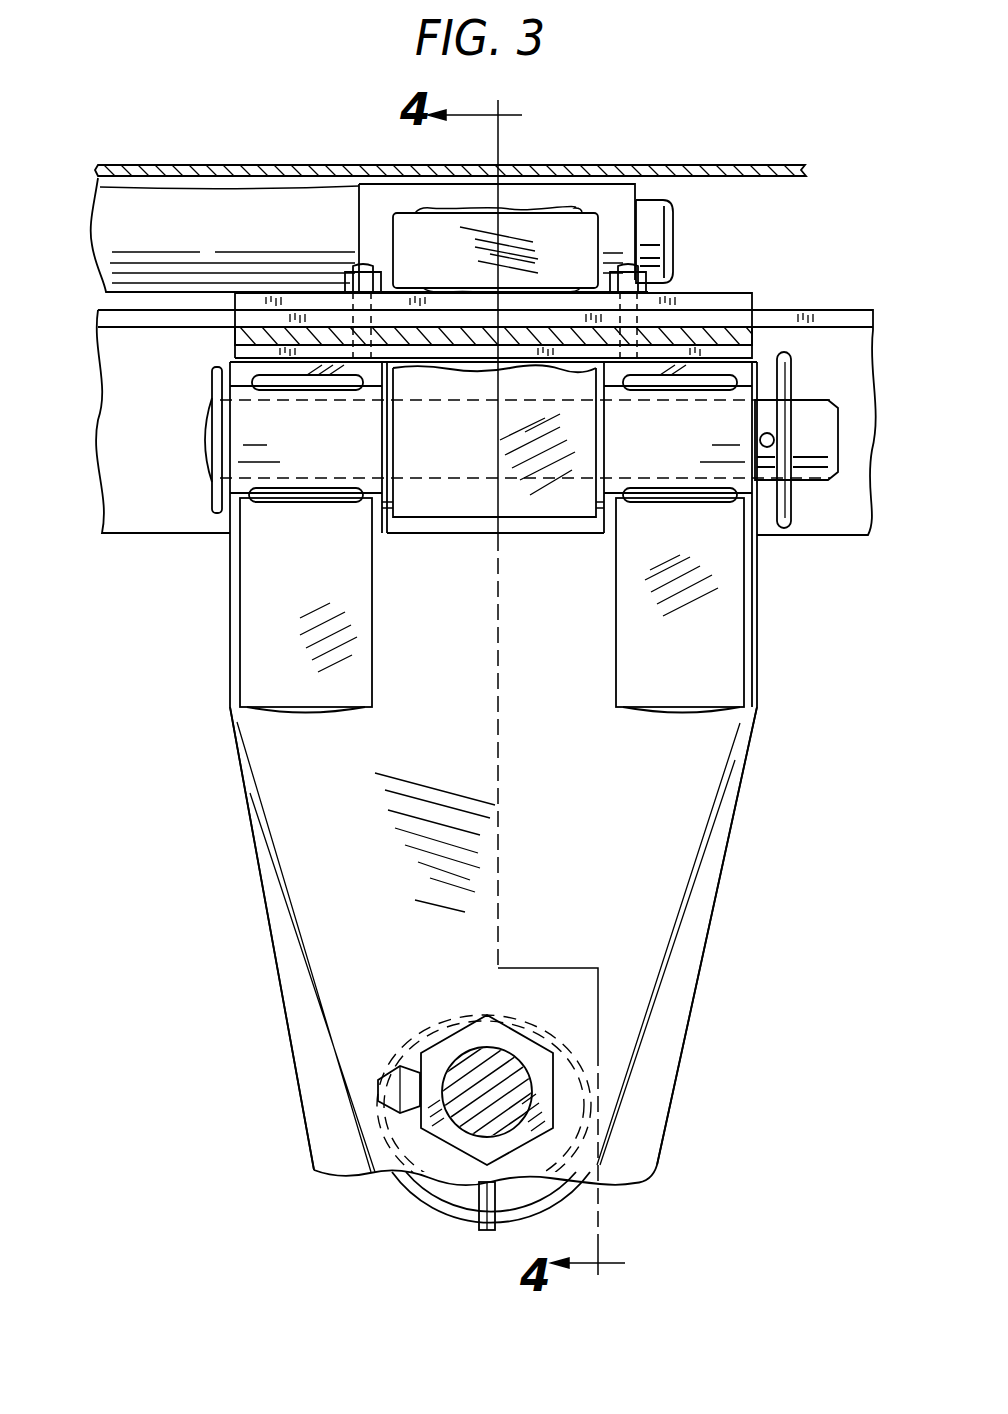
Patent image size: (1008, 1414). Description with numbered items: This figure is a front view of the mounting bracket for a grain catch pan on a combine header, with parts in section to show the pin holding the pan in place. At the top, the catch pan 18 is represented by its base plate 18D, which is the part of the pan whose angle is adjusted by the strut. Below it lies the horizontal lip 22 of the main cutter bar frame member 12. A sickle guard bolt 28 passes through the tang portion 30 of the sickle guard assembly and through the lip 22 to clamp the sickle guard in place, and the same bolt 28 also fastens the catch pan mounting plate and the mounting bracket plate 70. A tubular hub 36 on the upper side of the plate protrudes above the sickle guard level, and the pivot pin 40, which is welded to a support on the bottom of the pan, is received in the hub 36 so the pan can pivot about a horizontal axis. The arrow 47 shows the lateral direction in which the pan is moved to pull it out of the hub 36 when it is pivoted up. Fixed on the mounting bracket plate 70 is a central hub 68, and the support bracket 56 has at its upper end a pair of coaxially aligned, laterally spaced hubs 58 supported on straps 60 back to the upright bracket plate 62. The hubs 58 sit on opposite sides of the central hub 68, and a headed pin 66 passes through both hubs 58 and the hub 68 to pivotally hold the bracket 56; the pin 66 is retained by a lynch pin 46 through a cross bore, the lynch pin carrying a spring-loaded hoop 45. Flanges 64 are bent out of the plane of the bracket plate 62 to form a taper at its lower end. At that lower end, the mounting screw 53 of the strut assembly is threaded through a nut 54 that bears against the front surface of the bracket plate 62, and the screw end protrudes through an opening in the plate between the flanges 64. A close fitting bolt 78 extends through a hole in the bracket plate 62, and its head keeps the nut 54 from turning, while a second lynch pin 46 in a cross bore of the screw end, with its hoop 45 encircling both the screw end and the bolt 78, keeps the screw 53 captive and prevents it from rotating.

The main cutter bar frame member 12 is at (130, 448).
The catch pan 18 is at (110, 156).
The base plate 18D is at (727, 165).
The horizontal lip 22 is at (837, 312).
The sickle guard bolt 28 is at (350, 272).
The tang portion 30 is at (235, 336).
The tubular hub 36 is at (390, 196).
The pivot pin 40 is at (653, 210).
The spring-loaded hoop 45 is at (788, 507).
The lynch pin 46 is at (764, 432).
The arrow 47 is at (152, 233).
The mounting screw 53 is at (500, 1082).
The nut 54 is at (543, 1102).
The support bracket 56 is at (650, 938).
The hubs 58 is at (350, 463).
The straps 60 is at (352, 665).
The bracket plate 62 is at (682, 815).
The flanges 64 is at (312, 1078).
The headed pin 66 is at (213, 490).
The central hub 68 is at (553, 477).
The mounting bracket plate 70 is at (223, 355).
The close fitting bolt 78 is at (397, 1088).